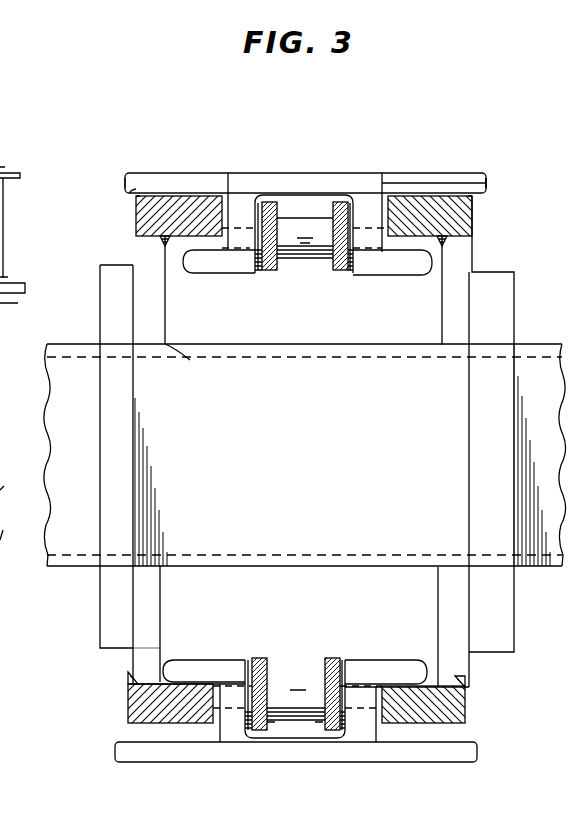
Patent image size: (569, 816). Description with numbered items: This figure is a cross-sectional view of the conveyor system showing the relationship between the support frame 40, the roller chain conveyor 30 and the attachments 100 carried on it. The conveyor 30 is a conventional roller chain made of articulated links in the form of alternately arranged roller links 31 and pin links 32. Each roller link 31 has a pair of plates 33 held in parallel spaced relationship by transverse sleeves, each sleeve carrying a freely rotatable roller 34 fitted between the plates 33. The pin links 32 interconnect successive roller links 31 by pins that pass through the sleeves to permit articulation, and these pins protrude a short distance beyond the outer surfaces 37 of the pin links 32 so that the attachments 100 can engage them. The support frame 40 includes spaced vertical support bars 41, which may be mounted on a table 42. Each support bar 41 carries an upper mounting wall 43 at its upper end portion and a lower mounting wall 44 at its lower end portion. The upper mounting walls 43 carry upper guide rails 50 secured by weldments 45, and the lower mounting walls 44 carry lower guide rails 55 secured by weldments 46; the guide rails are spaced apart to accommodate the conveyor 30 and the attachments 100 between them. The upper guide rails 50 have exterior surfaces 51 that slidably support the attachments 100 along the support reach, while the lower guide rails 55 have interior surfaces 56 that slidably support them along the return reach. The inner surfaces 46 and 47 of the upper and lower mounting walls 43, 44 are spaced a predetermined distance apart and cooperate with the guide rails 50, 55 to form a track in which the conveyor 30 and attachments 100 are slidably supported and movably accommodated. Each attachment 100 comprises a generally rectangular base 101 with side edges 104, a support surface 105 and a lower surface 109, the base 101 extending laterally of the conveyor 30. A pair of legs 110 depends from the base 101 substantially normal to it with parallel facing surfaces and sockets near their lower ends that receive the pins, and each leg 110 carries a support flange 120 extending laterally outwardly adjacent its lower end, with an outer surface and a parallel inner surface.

The attachment 100 is at (494, 176).
The base 101 is at (360, 172).
The side edges 104 is at (125, 185).
The support surface 105 is at (270, 173).
The lower surface 109 is at (137, 197).
The legs 110 is at (213, 204).
The support flange 120 is at (216, 273).
The conveyor 30 is at (312, 267).
The roller links 31 is at (282, 272).
The pin links 32 is at (262, 273).
The plates 33 is at (333, 208).
The roller 34 is at (300, 471).
The outer surfaces 37 is at (257, 274).
The support frame 40 is at (530, 318).
The vertical support bars 41 is at (133, 456).
The table 42 is at (541, 568).
The upper mounting walls 43 is at (150, 285).
The lower mounting walls 44 is at (147, 612).
The weldments 45 is at (163, 243).
The weldments 46 is at (505, 690).
The inner surfaces 47 is at (160, 582).
The upper guide rails 50 is at (136, 215).
The exterior surfaces 51 is at (133, 184).
The lower guide rails 55 is at (128, 706).
The interior surfaces 56 is at (158, 670).